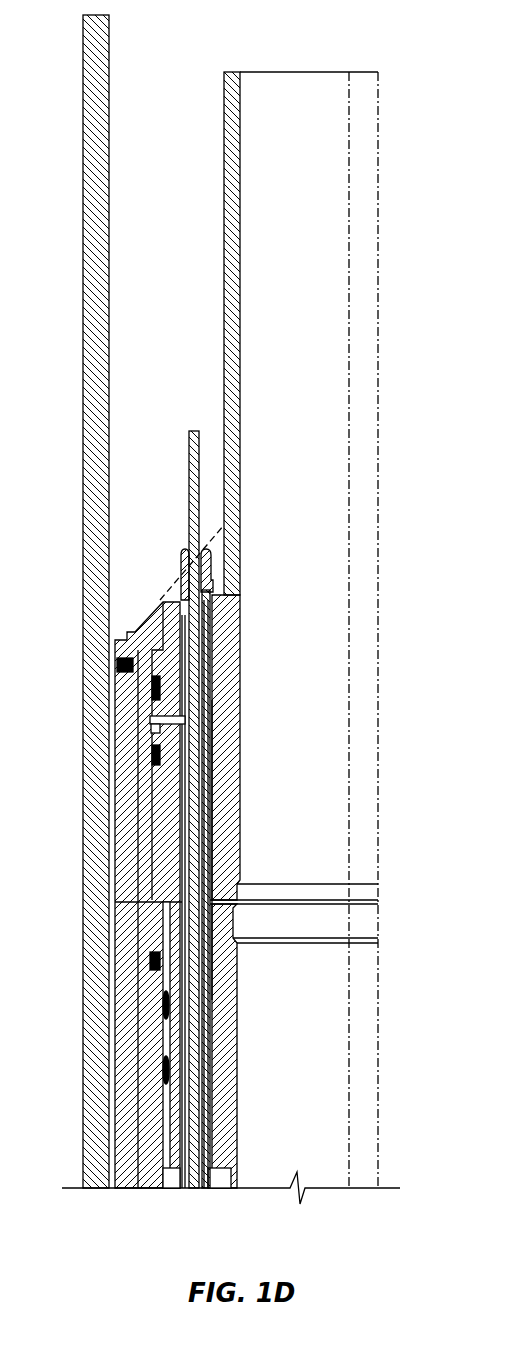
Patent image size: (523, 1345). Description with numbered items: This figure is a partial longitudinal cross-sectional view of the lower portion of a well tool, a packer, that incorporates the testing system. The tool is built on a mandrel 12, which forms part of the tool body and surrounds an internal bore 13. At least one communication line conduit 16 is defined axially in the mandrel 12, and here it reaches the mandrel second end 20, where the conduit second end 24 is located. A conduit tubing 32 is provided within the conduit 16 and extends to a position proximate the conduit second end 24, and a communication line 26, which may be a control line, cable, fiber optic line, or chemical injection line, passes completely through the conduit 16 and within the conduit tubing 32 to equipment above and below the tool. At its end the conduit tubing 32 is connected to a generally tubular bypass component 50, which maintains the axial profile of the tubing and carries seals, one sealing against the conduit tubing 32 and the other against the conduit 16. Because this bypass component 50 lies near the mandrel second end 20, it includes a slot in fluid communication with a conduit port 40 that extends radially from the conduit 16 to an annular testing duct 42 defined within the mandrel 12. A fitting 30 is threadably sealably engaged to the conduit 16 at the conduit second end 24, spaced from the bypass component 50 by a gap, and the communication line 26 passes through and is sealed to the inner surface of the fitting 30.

The mandrel 12 is at (160, 602).
The internal bore 13 is at (325, 253).
The communication line conduit 16 is at (210, 623).
The mandrel second end 20 is at (224, 88).
The conduit second end 24 is at (178, 607).
The communication line 26 is at (187, 440).
The fitting 30 is at (205, 588).
The conduit tubing 32 is at (207, 845).
The conduit port 40 is at (153, 728).
The testing duct 42 is at (153, 718).
The bypass component 50 is at (247, 761).